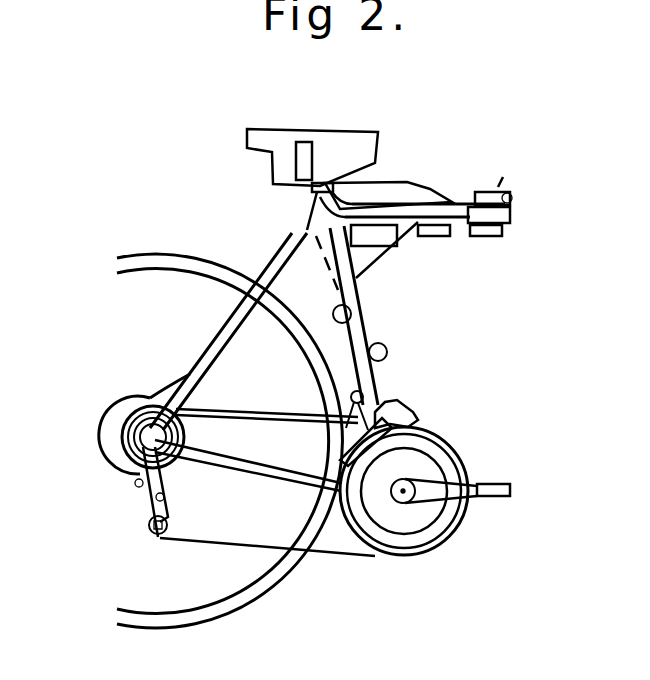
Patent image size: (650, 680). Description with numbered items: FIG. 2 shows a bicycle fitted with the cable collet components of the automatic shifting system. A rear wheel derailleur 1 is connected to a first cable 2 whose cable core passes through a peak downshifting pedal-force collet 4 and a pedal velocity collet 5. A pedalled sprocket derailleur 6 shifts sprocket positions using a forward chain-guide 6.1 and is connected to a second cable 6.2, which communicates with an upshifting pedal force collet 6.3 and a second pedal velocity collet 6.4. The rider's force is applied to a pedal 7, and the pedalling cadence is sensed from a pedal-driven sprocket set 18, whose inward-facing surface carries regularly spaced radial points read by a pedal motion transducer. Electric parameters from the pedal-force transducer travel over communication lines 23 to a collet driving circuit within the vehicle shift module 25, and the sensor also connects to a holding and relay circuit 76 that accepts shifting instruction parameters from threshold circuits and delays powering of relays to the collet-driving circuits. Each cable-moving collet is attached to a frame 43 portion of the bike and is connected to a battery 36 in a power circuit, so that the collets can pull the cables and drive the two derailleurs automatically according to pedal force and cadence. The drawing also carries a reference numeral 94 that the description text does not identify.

The rear wheel derailleur 1 is at (143, 476).
The first cable 2 is at (128, 402).
The peak downshifting pedal-force collet 4 is at (490, 236).
The pedal velocity collet 5 is at (435, 238).
The pedalled sprocket derailleur 6 is at (378, 388).
The forward chain-guide 6.1 is at (424, 412).
The second cable 6.2 is at (365, 356).
The upshifting pedal force collet 6.3 is at (338, 328).
The second pedal velocity collet 6.4 is at (334, 292).
The pedal 7 is at (514, 487).
The pedal-driven sprocket set 18 is at (436, 543).
The communication lines 23 is at (450, 193).
The vehicle shift module 25 is at (490, 188).
The battery 36 is at (303, 230).
The frame 43 is at (305, 220).
The holding and relay circuit 76 is at (293, 157).
The pedal 94 is at (150, 514).